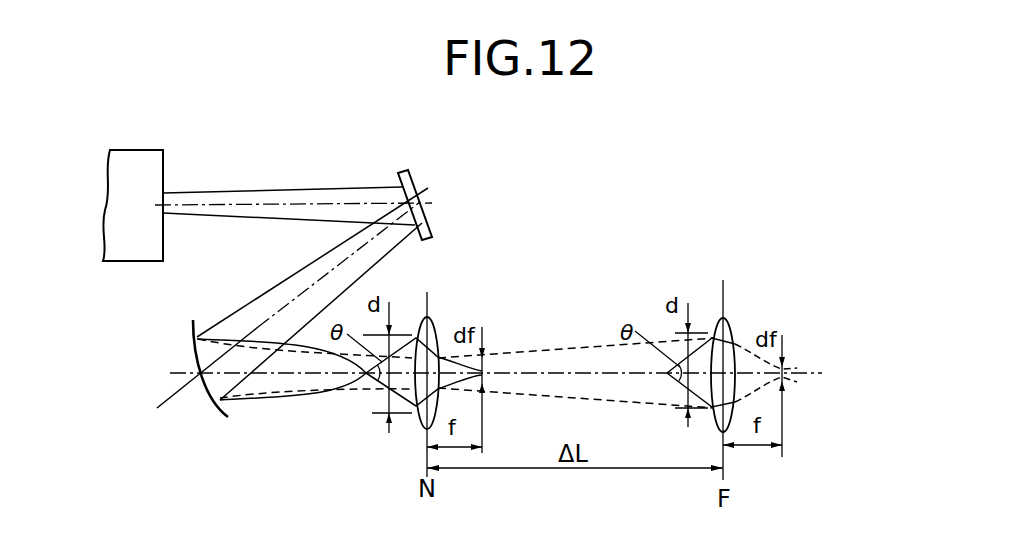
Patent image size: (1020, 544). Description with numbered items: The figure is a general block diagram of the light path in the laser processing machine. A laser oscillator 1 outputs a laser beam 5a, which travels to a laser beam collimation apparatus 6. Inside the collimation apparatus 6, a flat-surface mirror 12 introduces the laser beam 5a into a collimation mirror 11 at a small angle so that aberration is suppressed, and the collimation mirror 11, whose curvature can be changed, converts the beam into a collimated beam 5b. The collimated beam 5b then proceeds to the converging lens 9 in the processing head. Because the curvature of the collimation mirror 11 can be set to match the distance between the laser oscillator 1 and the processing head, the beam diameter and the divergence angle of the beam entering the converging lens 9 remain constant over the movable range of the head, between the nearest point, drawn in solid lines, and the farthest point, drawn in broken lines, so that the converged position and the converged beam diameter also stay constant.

The laser oscillator 1 is at (128, 160).
The laser beam 5a is at (282, 192).
The collimated beam 5b is at (540, 354).
The flat-surface mirror 12 is at (432, 223).
The laser beam collimation apparatus 6 is at (230, 293).
The collimation mirror 11 is at (226, 415).
The converging lens 9 is at (425, 426).